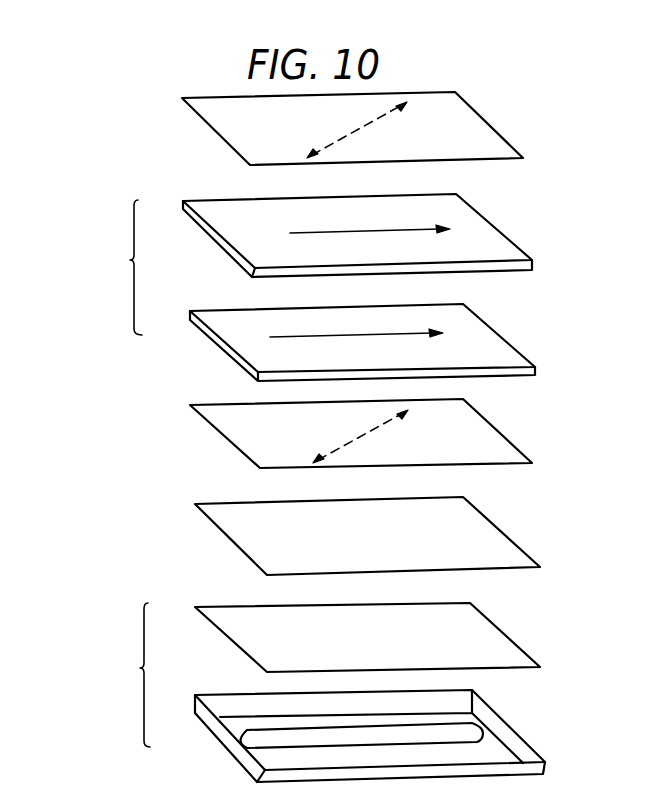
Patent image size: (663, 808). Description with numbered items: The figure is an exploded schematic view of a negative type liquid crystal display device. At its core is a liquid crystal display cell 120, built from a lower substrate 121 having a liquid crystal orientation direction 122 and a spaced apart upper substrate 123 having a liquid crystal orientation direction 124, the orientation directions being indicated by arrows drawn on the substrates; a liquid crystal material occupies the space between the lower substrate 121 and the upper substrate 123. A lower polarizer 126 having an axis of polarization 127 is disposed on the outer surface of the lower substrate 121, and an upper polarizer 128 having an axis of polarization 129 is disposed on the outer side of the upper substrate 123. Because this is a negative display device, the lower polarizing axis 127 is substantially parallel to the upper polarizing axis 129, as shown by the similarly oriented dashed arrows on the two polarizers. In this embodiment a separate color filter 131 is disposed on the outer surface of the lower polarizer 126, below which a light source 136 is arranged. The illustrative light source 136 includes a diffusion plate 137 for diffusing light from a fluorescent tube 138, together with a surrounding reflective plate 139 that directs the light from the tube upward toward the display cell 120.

The liquid crystal display cell 120 is at (125, 260).
The lower substrate 121 is at (503, 352).
The liquid crystal orientation direction 122 is at (405, 332).
The upper substrate 123 is at (507, 247).
The liquid crystal orientation direction 124 is at (410, 229).
The lower polarizer 126 is at (475, 428).
The axis of polarization 127 is at (353, 444).
The upper polarizer 128 is at (463, 118).
The axis of polarization 129 is at (347, 139).
The color filter 131 is at (487, 533).
The light source 136 is at (137, 668).
The diffusion plate 137 is at (490, 635).
The fluorescent tube 138 is at (470, 735).
The reflective plate 139 is at (487, 712).